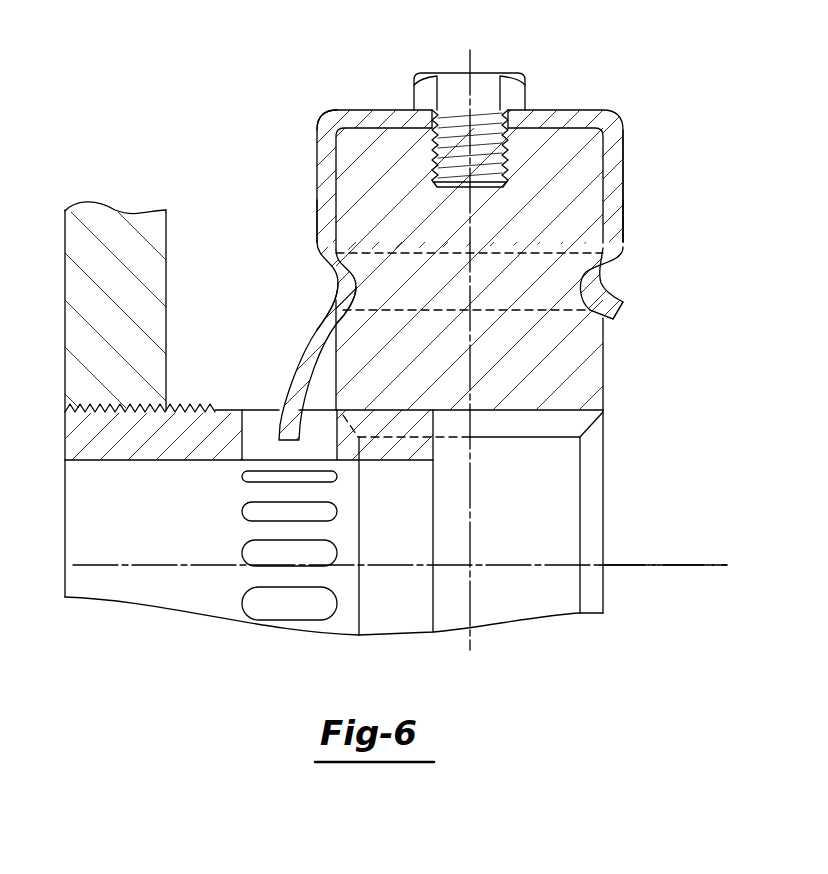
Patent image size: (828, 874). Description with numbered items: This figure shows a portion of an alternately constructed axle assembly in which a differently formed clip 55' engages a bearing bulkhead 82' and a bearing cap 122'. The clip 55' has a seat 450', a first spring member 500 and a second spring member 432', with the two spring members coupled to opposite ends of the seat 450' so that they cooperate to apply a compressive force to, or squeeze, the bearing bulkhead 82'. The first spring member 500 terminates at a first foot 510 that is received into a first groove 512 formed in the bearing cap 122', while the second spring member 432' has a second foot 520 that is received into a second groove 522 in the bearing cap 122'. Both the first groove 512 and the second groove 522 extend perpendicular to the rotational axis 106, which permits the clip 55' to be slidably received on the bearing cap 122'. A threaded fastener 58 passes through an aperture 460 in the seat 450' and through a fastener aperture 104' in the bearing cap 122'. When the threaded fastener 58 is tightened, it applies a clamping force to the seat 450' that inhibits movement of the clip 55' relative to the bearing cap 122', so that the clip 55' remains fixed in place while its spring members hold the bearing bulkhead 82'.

The threaded fastener 58 is at (450, 93).
The clip 55' is at (259, 94).
The seat 450' is at (456, 156).
The fastener aperture 104' is at (429, 117).
The aperture 460 is at (518, 118).
The first spring member 500 is at (624, 192).
The second spring member 432' is at (416, 269).
The second foot 520 is at (342, 278).
The second groove 522 is at (345, 287).
The bearing cap 122' is at (543, 240).
The first foot 510 is at (600, 263).
The first groove 512 is at (590, 300).
The bearing bulkhead 82' is at (373, 494).
The rotational axis 106 is at (635, 563).